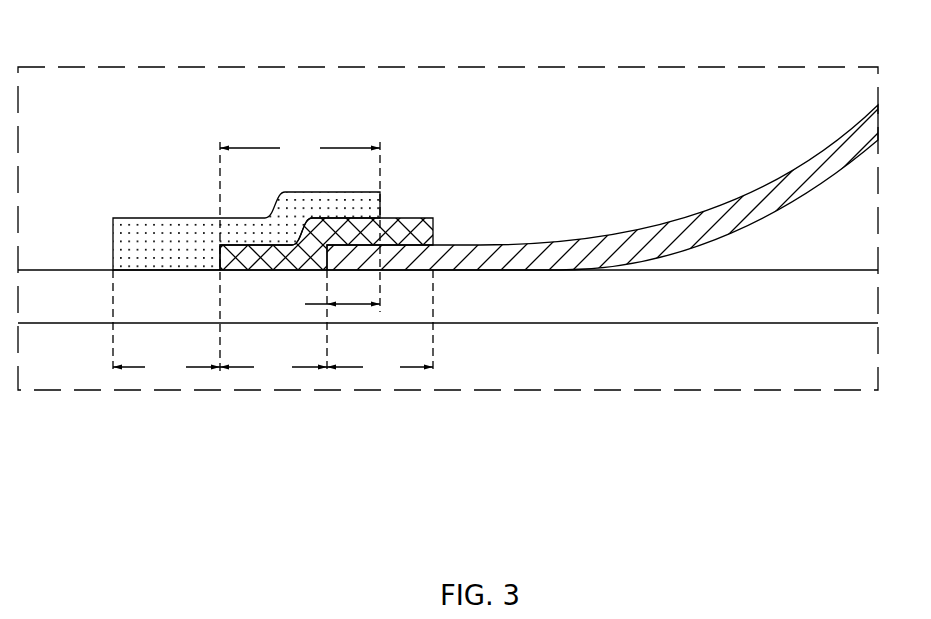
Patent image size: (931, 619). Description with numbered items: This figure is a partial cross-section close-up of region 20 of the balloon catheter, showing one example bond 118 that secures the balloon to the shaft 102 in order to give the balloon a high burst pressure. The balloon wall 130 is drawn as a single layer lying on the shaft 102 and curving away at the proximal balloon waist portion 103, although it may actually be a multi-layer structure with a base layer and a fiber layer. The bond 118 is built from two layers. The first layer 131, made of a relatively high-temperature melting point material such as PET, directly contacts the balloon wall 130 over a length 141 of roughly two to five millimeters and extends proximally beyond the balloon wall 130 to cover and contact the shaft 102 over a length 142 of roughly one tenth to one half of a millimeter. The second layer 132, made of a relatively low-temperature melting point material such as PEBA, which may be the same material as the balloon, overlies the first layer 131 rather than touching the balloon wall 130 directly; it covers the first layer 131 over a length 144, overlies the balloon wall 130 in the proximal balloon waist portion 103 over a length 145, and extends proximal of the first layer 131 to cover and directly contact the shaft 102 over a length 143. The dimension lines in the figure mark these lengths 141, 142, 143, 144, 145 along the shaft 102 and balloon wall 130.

The region 20 is at (598, 67).
The shaft 102 is at (513, 313).
The proximal balloon waist portion 103 is at (619, 186).
The bond 118 is at (310, 177).
The balloon wall 130 is at (752, 196).
The first layer 131 is at (420, 218).
The second layer 132 is at (368, 192).
The length 141 is at (380, 368).
The length 142 is at (273, 368).
The length 143 is at (166, 368).
The length 144 is at (300, 149).
The length 145 is at (326, 305).